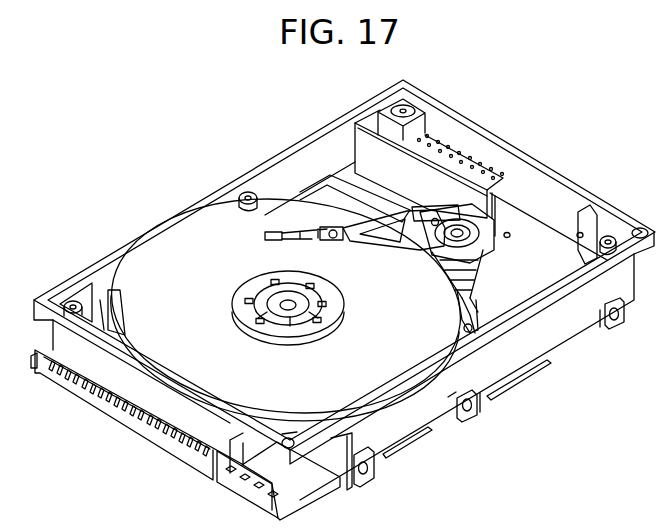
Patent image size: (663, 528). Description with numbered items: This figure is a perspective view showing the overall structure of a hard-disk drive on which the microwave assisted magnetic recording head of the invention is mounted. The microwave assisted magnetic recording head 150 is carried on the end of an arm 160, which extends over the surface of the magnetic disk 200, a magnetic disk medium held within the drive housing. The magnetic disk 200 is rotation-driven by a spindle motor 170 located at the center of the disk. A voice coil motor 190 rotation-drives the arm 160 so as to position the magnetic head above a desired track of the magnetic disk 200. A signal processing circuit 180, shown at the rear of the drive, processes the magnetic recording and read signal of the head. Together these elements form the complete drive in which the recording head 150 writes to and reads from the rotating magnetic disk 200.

The microwave assisted magnetic recording head 150 is at (267, 232).
The arm 160 is at (322, 194).
The spindle motor 170 is at (253, 317).
The signal processing circuit 180 is at (450, 162).
The voice coil motor 190 is at (493, 216).
The magnetic disk 200 is at (370, 352).